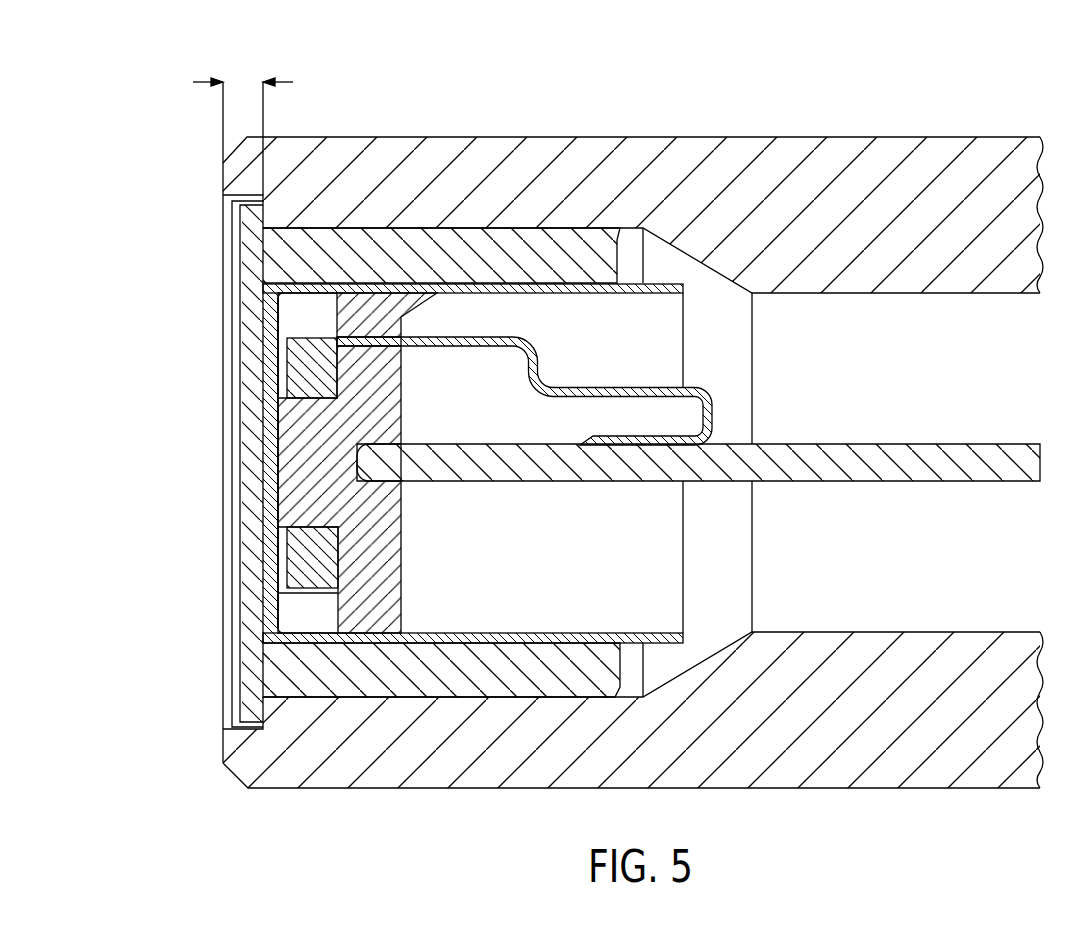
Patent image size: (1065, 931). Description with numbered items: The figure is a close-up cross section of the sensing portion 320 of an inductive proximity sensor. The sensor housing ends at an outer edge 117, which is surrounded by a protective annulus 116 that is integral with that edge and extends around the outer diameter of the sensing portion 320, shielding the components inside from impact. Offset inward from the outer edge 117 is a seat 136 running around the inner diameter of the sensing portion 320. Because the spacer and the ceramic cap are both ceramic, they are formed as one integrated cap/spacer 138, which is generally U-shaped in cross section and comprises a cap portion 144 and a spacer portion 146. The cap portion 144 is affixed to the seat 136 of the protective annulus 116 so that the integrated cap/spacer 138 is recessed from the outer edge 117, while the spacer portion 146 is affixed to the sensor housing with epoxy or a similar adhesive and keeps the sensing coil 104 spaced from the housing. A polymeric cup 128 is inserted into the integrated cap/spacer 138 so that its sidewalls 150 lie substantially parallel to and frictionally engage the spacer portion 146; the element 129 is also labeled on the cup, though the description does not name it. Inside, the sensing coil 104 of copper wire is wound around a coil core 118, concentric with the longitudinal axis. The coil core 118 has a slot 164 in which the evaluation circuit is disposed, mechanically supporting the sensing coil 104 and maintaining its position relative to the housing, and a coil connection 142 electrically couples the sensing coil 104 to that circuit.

The sensing portion 320 is at (918, 103).
The protective annulus 116 is at (243, 80).
The outer edge 117 is at (218, 750).
The seat 136 is at (264, 209).
The integrated cap/spacer 138 is at (258, 258).
The spacer portion 146 is at (503, 240).
The sidewalls 150 is at (568, 295).
The outer conductor tube bottom wall 129 is at (487, 633).
The cap portion 144 is at (273, 420).
The polymeric cup 128 is at (273, 495).
The coil core 118 is at (297, 462).
The sensing coil 104 is at (287, 362).
The coil connection 142 is at (547, 373).
The slot 164 is at (402, 483).